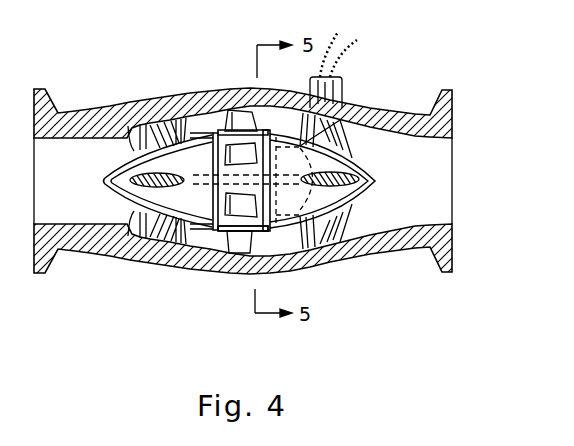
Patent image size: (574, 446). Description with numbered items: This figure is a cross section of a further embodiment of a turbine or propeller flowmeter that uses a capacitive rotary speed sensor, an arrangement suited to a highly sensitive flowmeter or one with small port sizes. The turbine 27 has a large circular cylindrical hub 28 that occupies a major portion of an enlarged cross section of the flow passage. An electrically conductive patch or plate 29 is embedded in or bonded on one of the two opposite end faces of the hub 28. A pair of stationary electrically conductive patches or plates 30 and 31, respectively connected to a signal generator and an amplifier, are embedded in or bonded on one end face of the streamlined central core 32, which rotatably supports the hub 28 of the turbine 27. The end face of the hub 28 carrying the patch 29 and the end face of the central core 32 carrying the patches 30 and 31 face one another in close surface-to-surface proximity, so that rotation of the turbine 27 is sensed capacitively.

The turbine 27 is at (222, 116).
The circular cylindrical hub 28 is at (210, 172).
The electrically conductive patch or plate 29 is at (212, 190).
The stationary electrically conductive patch or plate 30 is at (338, 130).
The stationary electrically conductive patch or plate 31 is at (282, 232).
The streamlined central core 32 is at (345, 162).